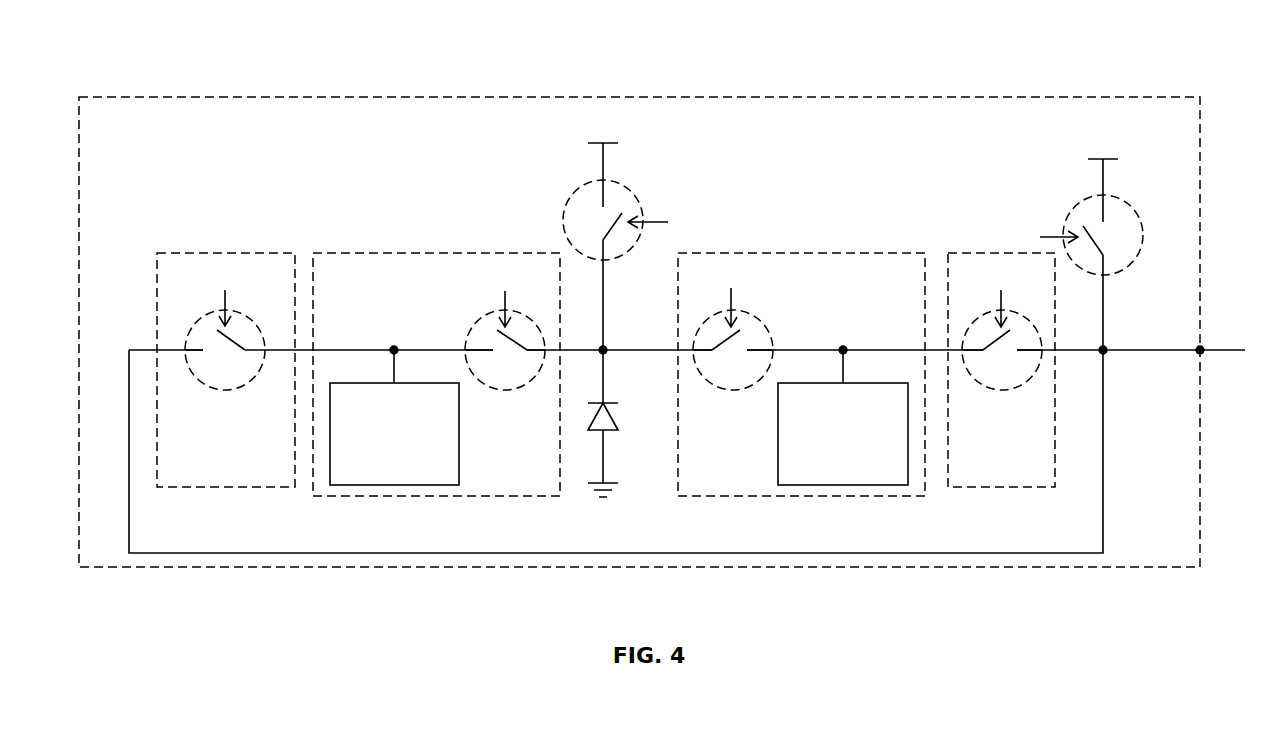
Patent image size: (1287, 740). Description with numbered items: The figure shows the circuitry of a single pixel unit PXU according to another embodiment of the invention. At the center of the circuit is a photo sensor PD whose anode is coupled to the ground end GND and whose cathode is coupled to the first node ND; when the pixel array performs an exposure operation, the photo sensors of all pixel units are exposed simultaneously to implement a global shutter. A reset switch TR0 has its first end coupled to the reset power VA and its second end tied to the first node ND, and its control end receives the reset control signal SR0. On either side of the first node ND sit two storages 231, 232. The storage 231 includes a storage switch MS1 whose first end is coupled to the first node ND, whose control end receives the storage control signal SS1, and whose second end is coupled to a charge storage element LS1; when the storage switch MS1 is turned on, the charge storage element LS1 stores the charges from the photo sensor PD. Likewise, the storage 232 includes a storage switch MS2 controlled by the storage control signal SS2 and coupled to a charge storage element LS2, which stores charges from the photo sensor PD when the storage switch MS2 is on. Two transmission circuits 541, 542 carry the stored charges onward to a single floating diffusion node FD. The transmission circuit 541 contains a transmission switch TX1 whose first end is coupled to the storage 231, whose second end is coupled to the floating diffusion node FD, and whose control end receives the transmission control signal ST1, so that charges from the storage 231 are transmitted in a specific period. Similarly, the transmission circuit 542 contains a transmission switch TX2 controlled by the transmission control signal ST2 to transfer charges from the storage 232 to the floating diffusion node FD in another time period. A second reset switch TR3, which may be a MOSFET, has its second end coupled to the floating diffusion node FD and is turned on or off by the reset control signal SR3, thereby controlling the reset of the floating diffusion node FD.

The pixel unit PXU is at (638, 95).
The transmission circuit 542 is at (225, 489).
The transmission circuit 541 is at (1002, 489).
The storage 232 is at (437, 250).
The storage 231 is at (802, 250).
The transmission switch TX2 is at (226, 392).
The transmission control signal ST2 is at (224, 294).
The storage switch MS2 is at (478, 322).
The storage control signal SS2 is at (505, 296).
The charge storage element LS2 is at (461, 420).
The reset power VA is at (853, 138).
The reset switch TR0 is at (632, 187).
The reset control signal SR0 is at (671, 223).
The first node ND is at (605, 348).
The photo sensor PD is at (612, 412).
The ground end GND is at (603, 503).
The storage switch MS1 is at (761, 322).
The storage control signal SS1 is at (730, 296).
The charge storage element LS1 is at (778, 420).
The transmission switch TX1 is at (1003, 392).
The transmission control signal ST1 is at (999, 295).
The reset switch TR3 is at (1130, 203).
The reset control signal SR3 is at (1035, 237).
The floating diffusion node FD is at (1203, 347).